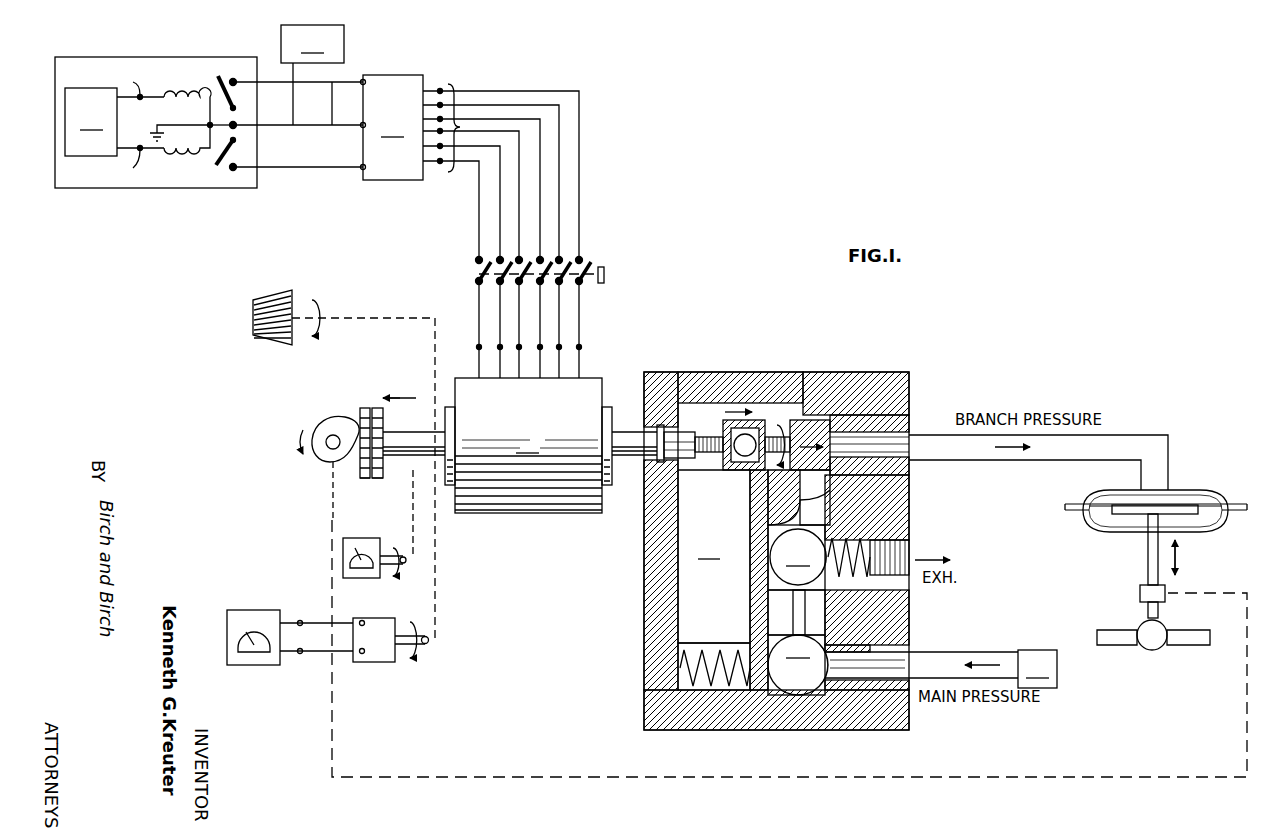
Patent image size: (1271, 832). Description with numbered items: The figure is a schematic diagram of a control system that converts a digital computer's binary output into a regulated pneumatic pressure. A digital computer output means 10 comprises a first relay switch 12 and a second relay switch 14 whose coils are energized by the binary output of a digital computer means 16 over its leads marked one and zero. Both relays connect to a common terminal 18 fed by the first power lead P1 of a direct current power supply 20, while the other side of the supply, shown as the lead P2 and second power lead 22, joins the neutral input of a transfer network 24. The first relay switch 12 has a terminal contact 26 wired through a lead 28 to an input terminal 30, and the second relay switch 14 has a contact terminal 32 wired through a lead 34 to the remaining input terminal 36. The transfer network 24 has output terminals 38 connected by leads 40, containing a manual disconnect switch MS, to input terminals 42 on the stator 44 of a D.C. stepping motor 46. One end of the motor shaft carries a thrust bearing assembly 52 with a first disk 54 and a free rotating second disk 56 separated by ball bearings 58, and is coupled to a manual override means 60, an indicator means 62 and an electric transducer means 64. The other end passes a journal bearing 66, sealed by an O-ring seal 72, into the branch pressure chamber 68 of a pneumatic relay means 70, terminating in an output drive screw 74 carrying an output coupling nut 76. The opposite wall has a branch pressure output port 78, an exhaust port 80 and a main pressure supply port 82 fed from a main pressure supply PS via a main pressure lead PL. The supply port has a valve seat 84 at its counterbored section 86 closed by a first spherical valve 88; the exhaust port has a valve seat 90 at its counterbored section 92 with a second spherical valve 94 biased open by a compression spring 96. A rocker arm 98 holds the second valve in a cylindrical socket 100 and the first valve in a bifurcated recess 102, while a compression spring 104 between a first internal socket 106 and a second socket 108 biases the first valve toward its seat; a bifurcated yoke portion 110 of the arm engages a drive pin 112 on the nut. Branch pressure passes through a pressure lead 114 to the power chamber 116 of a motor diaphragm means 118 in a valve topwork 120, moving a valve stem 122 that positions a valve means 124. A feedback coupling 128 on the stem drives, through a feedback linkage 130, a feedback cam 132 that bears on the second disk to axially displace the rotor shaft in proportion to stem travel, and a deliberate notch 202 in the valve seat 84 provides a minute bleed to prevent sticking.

The digital computer output means 10 is at (143, 190).
The first relay switch 12 is at (213, 167).
The second relay switch 14 is at (216, 74).
The digital computer means 16 is at (139, 121).
The common terminal 18 is at (236, 123).
The direct current power supply 20 is at (312, 44).
The second power lead / neutral input terminal 22 is at (360, 127).
The transfer network 24 is at (392, 127).
The terminal contact 26 is at (236, 168).
The lead 28 is at (306, 172).
The input terminal 30 is at (360, 169).
The contact terminal 32 is at (235, 79).
The lead 34 is at (308, 82).
The remaining input terminal 36 is at (344, 103).
The output terminals 38 is at (442, 82).
The leads 40 is at (564, 162).
The input terminals 42 is at (583, 350).
The stator 44 is at (598, 378).
The D.C. stepping motor 46 is at (528, 471).
The thrust bearing assembly 52 is at (374, 406).
The first coaxial integral disk 54 is at (378, 479).
The second coaxial disk 56 is at (362, 407).
The ball bearings 58 is at (365, 479).
The manual override means 60 is at (252, 330).
The indicator means 62 is at (345, 570).
The electric transducer means 64 is at (378, 662).
The journal bearing 66 is at (690, 466).
The branch pressure chamber 68 is at (714, 523).
The pneumatic relay means 70 is at (912, 613).
The peripheral O-ring seal 72 is at (656, 435).
The output drive screw 74 is at (712, 435).
The output coupling nut 76 is at (755, 422).
The branch pressure output port 78 is at (912, 476).
The exhaust port 80 is at (905, 558).
The main pressure supply port 82 is at (895, 668).
The valve seat 84 is at (832, 692).
The counterbored section 86 is at (818, 695).
The first spherical valve 88 is at (798, 665).
The valve seat 90 is at (826, 522).
The counterbored section 92 is at (860, 540).
The second spherical valve 94 is at (798, 557).
The compression spring 96 is at (868, 585).
The relay actuating rocker arm 98 is at (760, 593).
The cylindrical socket 100 is at (768, 527).
The bifurcated converging wall recess 102 is at (770, 625).
The compression spring 104 is at (665, 688).
The first internal socket 106 is at (680, 664).
The second socket 108 is at (756, 648).
The bifurcated yoke portion 110 is at (778, 436).
The drive pin 112 is at (745, 448).
The pressure lead 114 is at (1170, 458).
The power chamber 116 is at (1176, 498).
The motor diaphragm means 118 is at (1188, 516).
The valve topwork 120 is at (1125, 490).
The valve stem 122 is at (1147, 550).
The valve means 124 is at (1166, 625).
The feedback coupling 128 is at (1140, 590).
The feedback linkage 130 is at (330, 511).
The feedback cam 132 is at (318, 450).
The notch or scratch 202 is at (832, 646).
The first power lead P1 is at (298, 143).
The pulse line P2 is at (315, 58).
The manual disconnect switch MS is at (604, 268).
The main pressure lead PL is at (982, 652).
The main pressure supply PS is at (1037, 669).